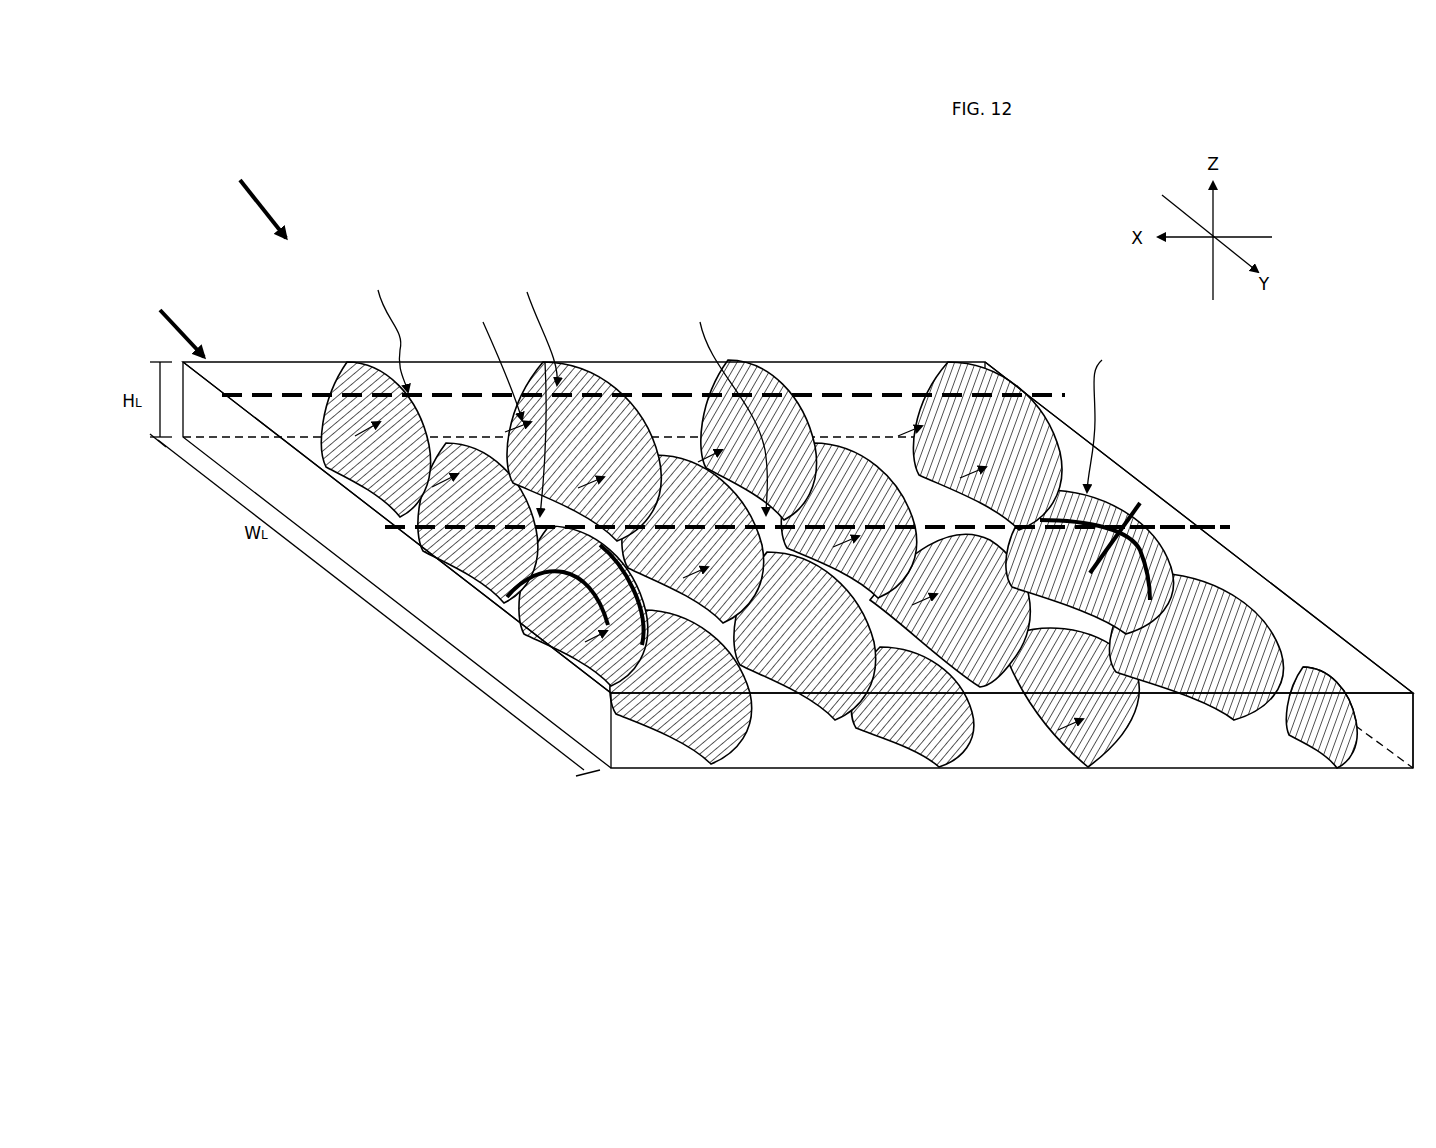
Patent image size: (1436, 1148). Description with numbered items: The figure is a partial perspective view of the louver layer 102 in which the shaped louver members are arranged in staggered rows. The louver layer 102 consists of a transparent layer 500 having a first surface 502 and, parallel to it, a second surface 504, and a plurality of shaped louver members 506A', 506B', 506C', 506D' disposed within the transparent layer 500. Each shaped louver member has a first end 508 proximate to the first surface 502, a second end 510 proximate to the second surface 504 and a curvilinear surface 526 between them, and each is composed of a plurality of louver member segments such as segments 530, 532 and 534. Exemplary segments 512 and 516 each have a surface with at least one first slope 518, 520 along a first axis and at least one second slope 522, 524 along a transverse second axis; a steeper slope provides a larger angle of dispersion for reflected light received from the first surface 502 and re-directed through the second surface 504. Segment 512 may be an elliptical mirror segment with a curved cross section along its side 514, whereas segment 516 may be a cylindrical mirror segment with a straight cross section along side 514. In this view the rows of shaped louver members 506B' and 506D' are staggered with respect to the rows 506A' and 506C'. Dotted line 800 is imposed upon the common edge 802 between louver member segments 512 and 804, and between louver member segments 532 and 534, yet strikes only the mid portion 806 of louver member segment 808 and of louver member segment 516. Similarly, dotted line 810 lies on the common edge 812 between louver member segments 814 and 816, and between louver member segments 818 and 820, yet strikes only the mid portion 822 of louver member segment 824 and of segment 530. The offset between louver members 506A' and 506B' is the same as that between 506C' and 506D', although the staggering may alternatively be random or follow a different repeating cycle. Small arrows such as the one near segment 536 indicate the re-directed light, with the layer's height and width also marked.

The louver layer 102 is at (251, 197).
The transparent layer 500 is at (780, 528).
The first surface 502 is at (612, 772).
The second surface 504 is at (300, 373).
The shaped louver member 506A' is at (564, 604).
The shaped louver member 506B' is at (767, 604).
The shaped louver member 506C' is at (943, 603).
The shaped louver member 506D' is at (1158, 604).
The first end 508 is at (1302, 760).
The second end 510 is at (1355, 692).
The louver member segment 512 is at (609, 691).
The side 514 is at (812, 755).
The louver member segment 516 is at (1058, 398).
The first slope 518 is at (598, 548).
The first slope 520 is at (1140, 504).
The second slope 522 is at (507, 597).
The second slope 524 is at (1150, 573).
The curvilinear surface 526 is at (1300, 667).
The louver member segment 530 is at (698, 466).
The louver member segment 532 is at (835, 555).
The louver member segment 534 is at (912, 613).
The light ray 536 is at (1058, 738).
The dotted line 800 is at (1227, 523).
The common edge 802 is at (490, 359).
The louver member segment 804 is at (410, 529).
The mid portion 806 is at (722, 406).
The louver member segment 808 is at (684, 585).
The dotted line 810 is at (1108, 415).
The common edge 812 is at (531, 392).
The louver member segment 814 is at (506, 440).
The louver member segment 816 is at (579, 496).
The louver member segment 818 is at (897, 443).
The louver member segment 820 is at (959, 484).
The mid portion 822 is at (380, 329).
The louver member segment 824 is at (342, 452).